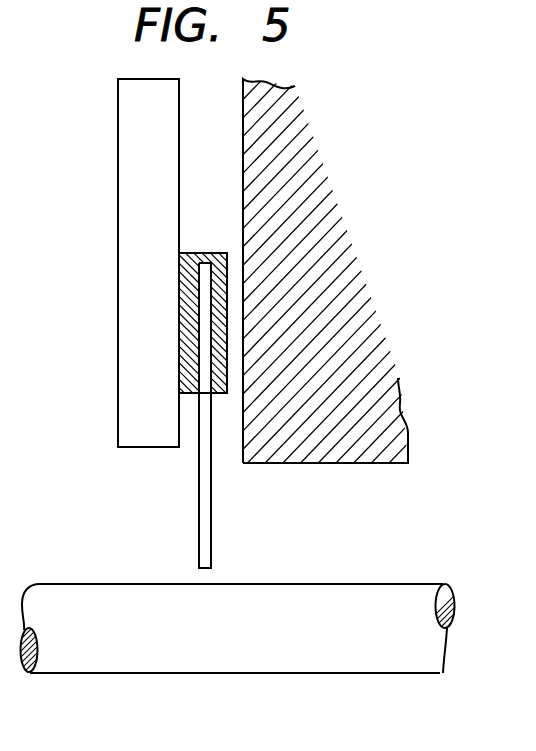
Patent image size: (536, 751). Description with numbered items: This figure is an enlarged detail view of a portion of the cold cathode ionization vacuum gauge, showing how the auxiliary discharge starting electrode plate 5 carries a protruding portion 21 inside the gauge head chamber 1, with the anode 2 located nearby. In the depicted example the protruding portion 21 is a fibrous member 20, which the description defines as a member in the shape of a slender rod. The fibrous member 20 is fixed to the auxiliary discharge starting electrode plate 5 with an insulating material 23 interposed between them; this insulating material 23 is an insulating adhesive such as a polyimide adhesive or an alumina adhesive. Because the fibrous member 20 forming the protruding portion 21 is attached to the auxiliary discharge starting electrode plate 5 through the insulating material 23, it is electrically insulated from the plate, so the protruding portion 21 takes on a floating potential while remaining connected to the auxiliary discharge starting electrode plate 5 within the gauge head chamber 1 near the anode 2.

The gauge head chamber 1 is at (243, 121).
The anode 2 is at (381, 591).
The auxiliary discharge starting electrode plate 5 is at (118, 151).
The fibrous member 20 is at (205, 325).
The protruding portion 21 is at (211, 521).
The insulating material 23 is at (215, 253).